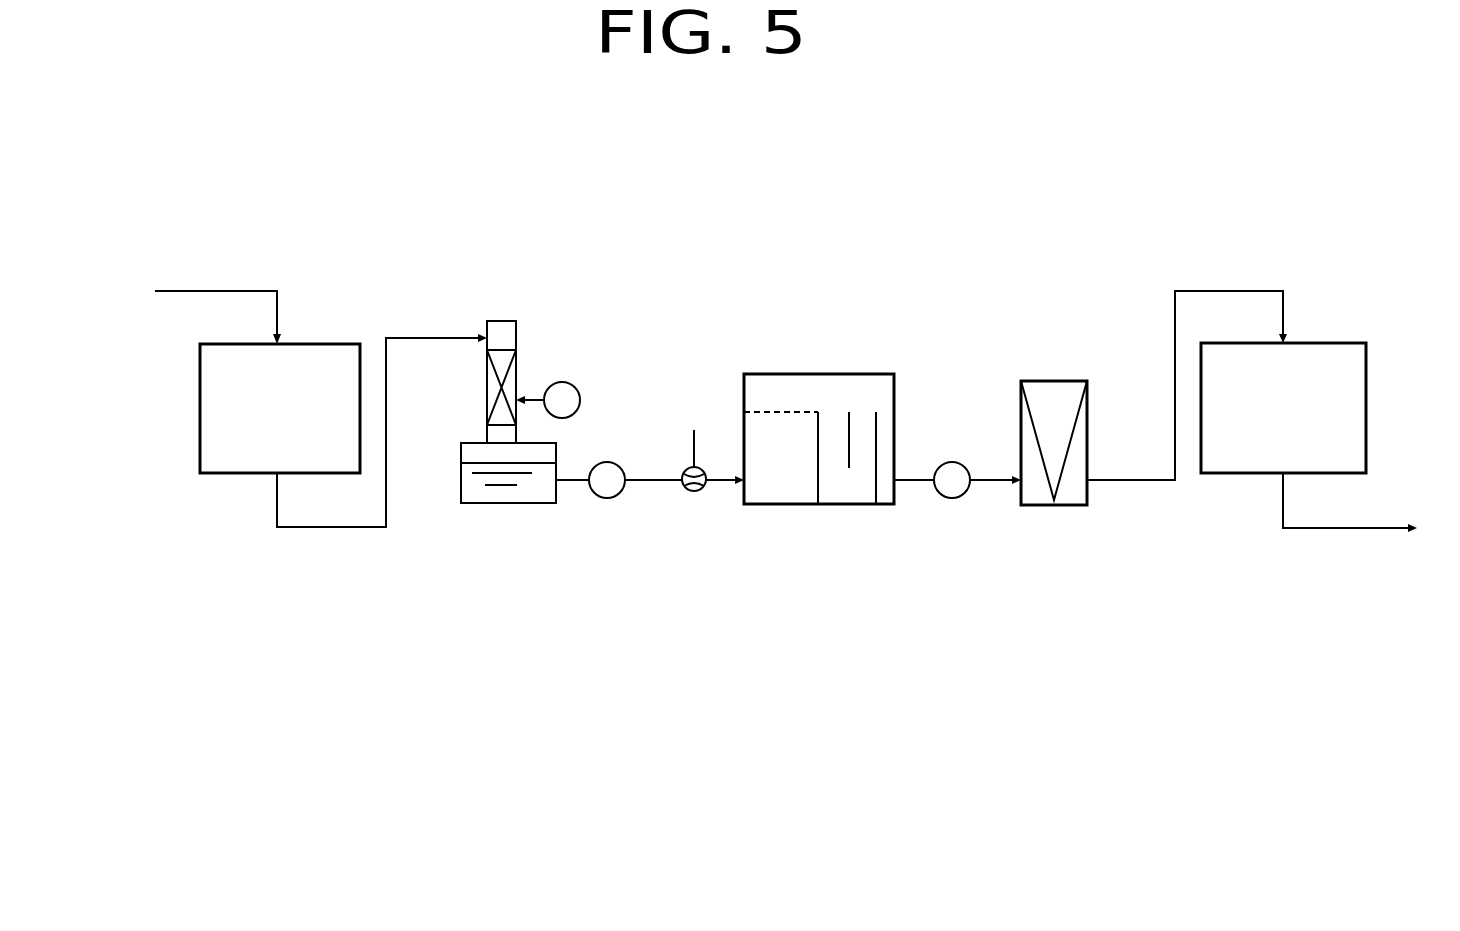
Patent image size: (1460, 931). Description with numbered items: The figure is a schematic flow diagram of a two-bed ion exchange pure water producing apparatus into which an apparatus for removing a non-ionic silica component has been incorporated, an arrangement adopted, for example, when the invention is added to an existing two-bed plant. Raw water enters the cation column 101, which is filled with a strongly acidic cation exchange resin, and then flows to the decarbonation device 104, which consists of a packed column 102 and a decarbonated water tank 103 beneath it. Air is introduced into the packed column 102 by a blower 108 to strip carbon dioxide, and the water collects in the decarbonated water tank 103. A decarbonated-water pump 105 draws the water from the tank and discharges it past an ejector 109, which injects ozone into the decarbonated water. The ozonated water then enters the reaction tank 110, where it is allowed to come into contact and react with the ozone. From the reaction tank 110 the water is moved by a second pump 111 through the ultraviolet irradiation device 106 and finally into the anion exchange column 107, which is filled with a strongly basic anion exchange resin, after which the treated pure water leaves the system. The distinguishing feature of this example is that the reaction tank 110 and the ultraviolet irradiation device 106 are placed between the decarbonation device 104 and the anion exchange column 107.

The cation column 101 is at (200, 407).
The packed column 102 is at (487, 400).
The decarbonated water tank 103 is at (492, 503).
The decarbonation device 104 is at (516, 358).
The decarbonated-water pump 105 is at (607, 498).
The ultraviolet irradiation device 106 is at (1043, 505).
The anion exchange column 107 is at (1366, 448).
The blower 108 is at (600, 400).
The ejector 109 is at (698, 491).
The reaction tank 110 is at (790, 504).
The pump 111 is at (952, 498).